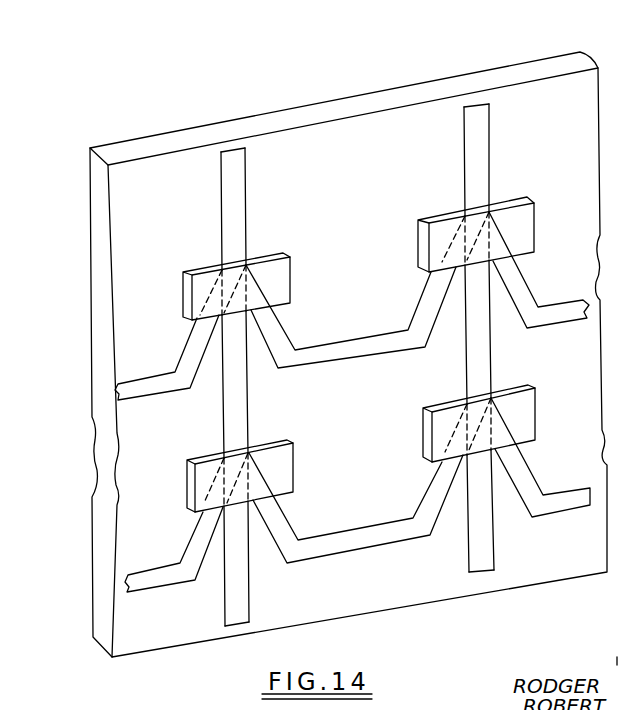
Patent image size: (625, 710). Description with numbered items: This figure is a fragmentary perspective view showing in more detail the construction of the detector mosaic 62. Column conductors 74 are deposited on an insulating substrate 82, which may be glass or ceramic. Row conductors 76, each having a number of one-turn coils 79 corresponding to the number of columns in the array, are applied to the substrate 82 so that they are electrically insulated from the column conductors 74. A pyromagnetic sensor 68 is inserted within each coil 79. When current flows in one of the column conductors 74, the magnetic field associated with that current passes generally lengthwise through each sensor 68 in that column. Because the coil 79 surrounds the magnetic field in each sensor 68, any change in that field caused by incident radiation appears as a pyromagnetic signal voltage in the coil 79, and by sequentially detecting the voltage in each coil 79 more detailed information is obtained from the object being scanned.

The detector mosaic 62 is at (139, 352).
The pyromagnetic sensor 68 is at (191, 294).
The column conductor 74 is at (237, 217).
The row conductor 76 is at (557, 317).
The one-turn coil 79 is at (258, 290).
The insulating substrate 82 is at (132, 536).